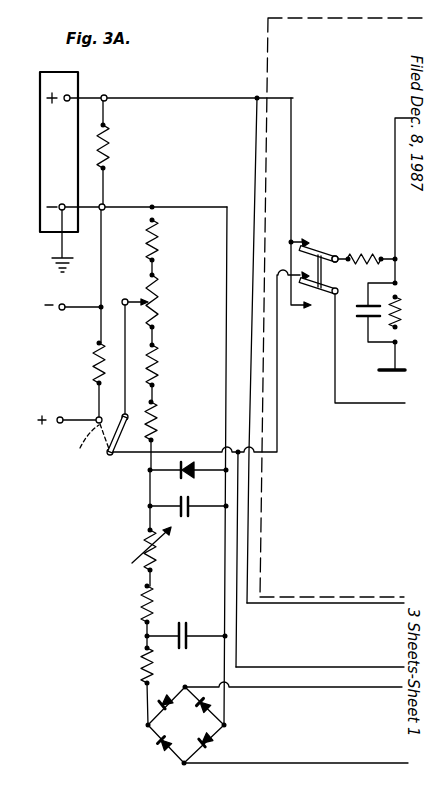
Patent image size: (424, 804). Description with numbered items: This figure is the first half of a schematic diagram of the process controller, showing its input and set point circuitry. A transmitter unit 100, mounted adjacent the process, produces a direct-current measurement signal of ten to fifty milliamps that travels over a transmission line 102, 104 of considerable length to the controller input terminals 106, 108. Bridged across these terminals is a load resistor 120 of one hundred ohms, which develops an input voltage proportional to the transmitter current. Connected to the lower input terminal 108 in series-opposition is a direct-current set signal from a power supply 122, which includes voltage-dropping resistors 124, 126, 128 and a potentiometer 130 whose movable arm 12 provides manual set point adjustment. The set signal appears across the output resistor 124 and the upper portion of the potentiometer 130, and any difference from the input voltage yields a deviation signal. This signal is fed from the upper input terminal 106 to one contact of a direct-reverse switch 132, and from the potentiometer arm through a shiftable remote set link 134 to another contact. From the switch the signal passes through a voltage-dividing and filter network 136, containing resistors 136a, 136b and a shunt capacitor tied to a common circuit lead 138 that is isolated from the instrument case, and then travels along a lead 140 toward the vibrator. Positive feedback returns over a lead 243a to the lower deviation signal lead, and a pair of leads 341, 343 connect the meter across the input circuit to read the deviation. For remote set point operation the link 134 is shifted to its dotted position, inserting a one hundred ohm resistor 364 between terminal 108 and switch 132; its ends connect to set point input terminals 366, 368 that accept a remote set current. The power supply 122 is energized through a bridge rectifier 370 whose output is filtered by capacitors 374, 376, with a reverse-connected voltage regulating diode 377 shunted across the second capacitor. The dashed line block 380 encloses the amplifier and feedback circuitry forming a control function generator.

The transmitter unit 100 is at (70, 161).
The transmission line 102 is at (88, 96).
The transmission line 104 is at (87, 218).
The upper input terminal 106 is at (107, 96).
The lower input terminal 108 is at (105, 210).
The wiper 12 is at (123, 301).
The load resistor 120 is at (111, 149).
The D.-C. power supply 122 is at (197, 576).
The output resistor 124 is at (159, 241).
The voltage-dropping resistor 126 is at (159, 361).
The voltage-dropping resistor 128 is at (158, 415).
The potentiometer 130 is at (159, 298).
The direct-reverse switch 132 is at (322, 242).
The remote set link 134 is at (94, 447).
The voltage-dividing and filter network 136 is at (366, 250).
The resistor 136a is at (365, 261).
The resistor 136b is at (377, 320).
The common circuit lead 138 is at (391, 371).
The lead 140 is at (394, 141).
The lead 243a is at (349, 406).
The lead 341 is at (381, 607).
The lead 343 is at (372, 666).
The resistor 364 is at (93, 361).
The set point input terminal 366 is at (59, 310).
The set point input terminal 368 is at (57, 418).
The bridge rectifier 370 is at (140, 738).
The capacitor 374 is at (192, 646).
The capacitor 376 is at (191, 506).
The voltage regulating diode 377 is at (188, 462).
The dashed line block 380 is at (258, 60).